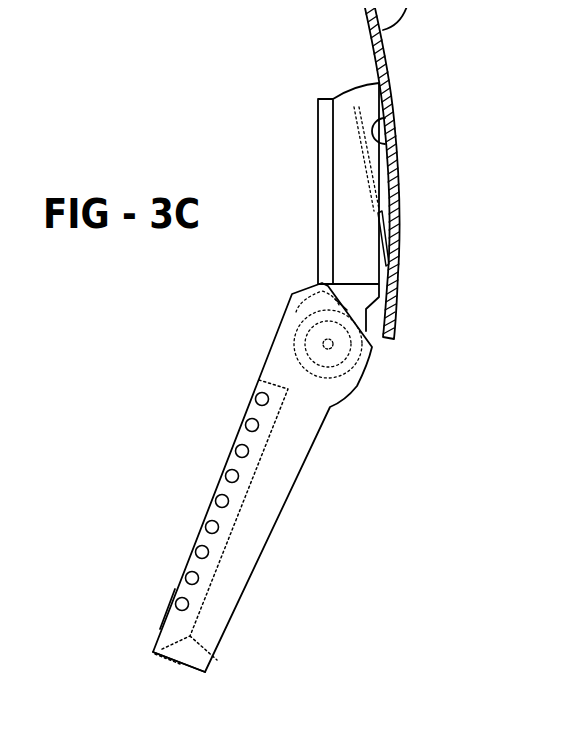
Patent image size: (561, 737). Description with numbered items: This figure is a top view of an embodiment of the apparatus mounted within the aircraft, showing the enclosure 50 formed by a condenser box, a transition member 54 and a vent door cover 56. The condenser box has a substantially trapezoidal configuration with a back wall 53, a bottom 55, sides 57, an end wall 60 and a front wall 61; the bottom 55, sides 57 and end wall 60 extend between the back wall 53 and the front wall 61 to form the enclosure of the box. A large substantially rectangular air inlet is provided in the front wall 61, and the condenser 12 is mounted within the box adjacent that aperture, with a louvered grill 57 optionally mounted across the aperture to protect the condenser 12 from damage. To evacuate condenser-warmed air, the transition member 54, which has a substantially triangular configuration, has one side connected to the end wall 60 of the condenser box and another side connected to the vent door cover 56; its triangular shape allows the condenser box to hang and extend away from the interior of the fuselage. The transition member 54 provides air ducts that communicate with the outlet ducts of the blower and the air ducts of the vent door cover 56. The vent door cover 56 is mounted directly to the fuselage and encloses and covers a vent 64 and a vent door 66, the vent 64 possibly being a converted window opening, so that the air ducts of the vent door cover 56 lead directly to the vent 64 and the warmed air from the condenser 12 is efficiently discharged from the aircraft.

The condenser 12 is at (217, 661).
The enclosure 50 is at (283, 604).
The back wall 53 is at (308, 452).
The transition member 54 is at (338, 311).
The bottom 55 is at (178, 667).
The vent door cover 56 is at (318, 192).
The side 57 is at (160, 622).
The end wall 60 is at (352, 332).
The front wall 61 is at (228, 462).
The vent 64 is at (392, 146).
The vent door 66 is at (386, 238).